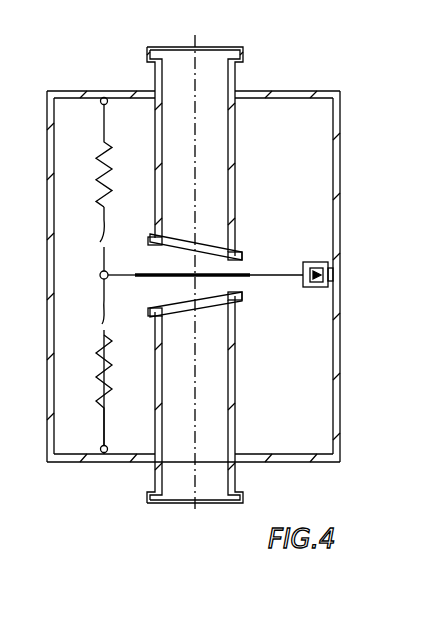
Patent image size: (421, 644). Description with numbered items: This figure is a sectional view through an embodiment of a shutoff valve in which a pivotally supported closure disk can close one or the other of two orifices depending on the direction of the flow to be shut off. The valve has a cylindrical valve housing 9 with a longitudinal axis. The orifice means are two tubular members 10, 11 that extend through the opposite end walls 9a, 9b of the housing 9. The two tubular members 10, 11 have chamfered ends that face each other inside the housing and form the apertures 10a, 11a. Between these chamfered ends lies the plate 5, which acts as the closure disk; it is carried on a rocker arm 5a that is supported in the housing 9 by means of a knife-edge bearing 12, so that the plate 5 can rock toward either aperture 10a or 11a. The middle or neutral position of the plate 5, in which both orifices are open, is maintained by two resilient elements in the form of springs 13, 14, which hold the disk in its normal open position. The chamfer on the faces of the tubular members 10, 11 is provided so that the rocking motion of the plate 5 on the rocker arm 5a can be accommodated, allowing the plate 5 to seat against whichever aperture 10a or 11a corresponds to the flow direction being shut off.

The valve housing 9 is at (341, 429).
The end wall 9a is at (84, 91).
The end wall 9b is at (120, 462).
The tubular member 10 is at (235, 158).
The aperture 10a is at (214, 243).
The tubular member 11 is at (235, 430).
The aperture 11a is at (208, 302).
The plate 5 is at (205, 256).
The rocker arm 5a is at (116, 325).
The knife-edge bearing 12 is at (320, 266).
The spring 13 is at (97, 173).
The spring 14 is at (97, 355).